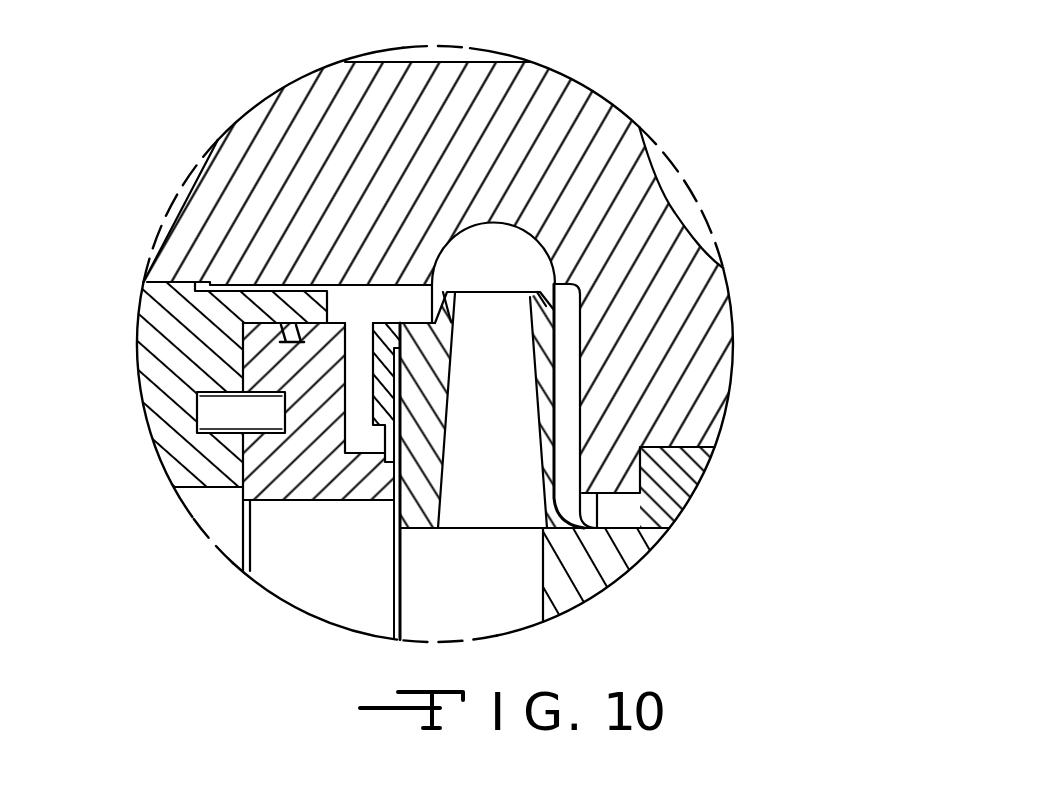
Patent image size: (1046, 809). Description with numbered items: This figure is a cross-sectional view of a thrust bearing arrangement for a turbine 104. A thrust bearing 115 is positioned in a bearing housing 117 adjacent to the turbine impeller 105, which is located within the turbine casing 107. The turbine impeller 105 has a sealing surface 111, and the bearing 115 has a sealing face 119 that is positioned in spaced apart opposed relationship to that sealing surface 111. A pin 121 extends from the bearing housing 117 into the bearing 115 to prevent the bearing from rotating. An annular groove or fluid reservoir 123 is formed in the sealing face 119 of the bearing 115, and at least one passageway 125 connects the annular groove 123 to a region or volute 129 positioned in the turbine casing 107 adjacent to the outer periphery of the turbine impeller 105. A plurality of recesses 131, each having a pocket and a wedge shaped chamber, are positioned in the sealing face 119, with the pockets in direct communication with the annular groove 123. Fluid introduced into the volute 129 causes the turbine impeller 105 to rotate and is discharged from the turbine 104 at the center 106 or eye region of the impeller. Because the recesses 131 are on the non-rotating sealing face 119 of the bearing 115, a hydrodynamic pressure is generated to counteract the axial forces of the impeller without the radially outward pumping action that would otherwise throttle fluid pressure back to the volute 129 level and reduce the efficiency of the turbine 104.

The turbine 104 is at (695, 18).
The turbine impeller 105 is at (512, 320).
The center 106 is at (545, 585).
The turbine casing 107 is at (691, 343).
The sealing surface 111 is at (412, 448).
The thrust bearing 115 is at (298, 490).
The bearing housing 117 is at (146, 406).
The sealing face 119 is at (397, 483).
The pin 121 is at (213, 413).
The annular groove 123 is at (397, 432).
The passageway 125 is at (340, 370).
The volute 129 is at (522, 260).
The recesses 131 is at (400, 363).